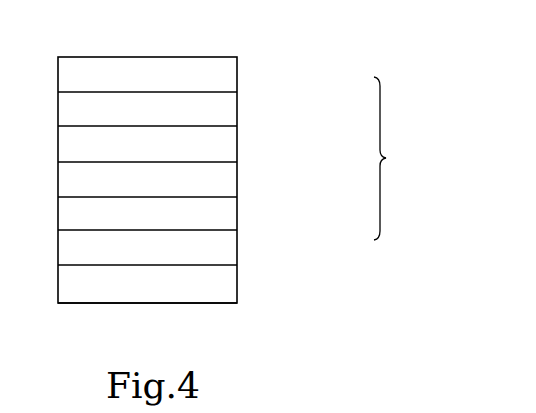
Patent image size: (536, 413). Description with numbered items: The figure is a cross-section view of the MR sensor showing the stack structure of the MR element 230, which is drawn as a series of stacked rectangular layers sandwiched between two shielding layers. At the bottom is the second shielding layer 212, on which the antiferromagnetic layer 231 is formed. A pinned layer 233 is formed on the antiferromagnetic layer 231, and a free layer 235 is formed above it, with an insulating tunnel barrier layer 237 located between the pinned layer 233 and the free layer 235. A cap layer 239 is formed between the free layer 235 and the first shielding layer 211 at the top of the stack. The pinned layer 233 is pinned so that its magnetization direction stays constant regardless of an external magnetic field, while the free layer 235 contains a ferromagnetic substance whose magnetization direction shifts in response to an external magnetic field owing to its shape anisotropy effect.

The first shielding layer 211 is at (215, 80).
The cap layer 239 is at (216, 117).
The free layer 235 is at (217, 150).
The insulating tunnel barrier layer 237 is at (218, 178).
The pinned layer 233 is at (218, 212).
The antiferromagnetic layer 231 is at (214, 257).
The second shielding layer 212 is at (214, 290).
The MR element 230 is at (402, 158).